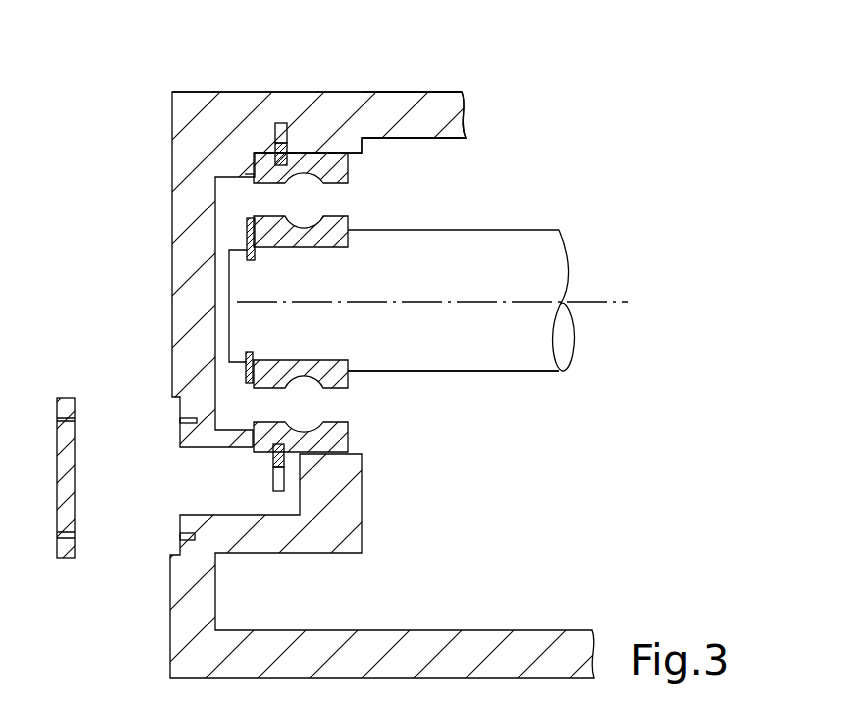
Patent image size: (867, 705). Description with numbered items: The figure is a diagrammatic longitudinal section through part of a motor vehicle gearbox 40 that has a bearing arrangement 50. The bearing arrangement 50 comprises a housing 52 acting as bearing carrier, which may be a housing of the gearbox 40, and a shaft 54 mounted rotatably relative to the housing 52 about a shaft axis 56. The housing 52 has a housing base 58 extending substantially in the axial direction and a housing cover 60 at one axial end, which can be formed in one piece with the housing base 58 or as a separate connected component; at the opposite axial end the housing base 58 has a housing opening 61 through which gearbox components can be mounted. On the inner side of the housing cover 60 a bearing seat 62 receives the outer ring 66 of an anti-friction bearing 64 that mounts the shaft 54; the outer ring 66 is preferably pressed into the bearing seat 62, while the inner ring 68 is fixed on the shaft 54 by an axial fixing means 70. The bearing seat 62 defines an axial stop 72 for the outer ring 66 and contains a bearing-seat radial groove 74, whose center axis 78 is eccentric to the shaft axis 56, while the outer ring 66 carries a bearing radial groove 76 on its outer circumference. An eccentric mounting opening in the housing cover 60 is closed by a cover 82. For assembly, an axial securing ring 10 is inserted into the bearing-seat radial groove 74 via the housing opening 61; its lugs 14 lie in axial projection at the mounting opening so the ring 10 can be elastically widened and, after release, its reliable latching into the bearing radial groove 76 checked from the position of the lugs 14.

The axial securing ring 10 is at (364, 139).
The lugs 14 is at (278, 480).
The motor vehicle gearbox 40 is at (622, 112).
The bearing arrangement 50 is at (657, 112).
The housing 52 is at (413, 92).
The shaft 54 is at (495, 257).
The shaft axis 56 is at (600, 300).
The housing base 58 is at (378, 105).
The housing cover 60 is at (188, 195).
The housing opening 61 is at (532, 451).
The bearing seat 62 is at (308, 160).
The anti-friction bearing 64 is at (381, 410).
The outer ring 66 is at (332, 440).
The inner ring 68 is at (347, 380).
The axial fixing means 70 is at (247, 243).
The axial stop 72 is at (246, 172).
The bearing-seat radial groove 74 is at (281, 123).
The bearing radial groove 76 is at (252, 261).
The center axis 78 is at (375, 307).
The cover 82 is at (65, 468).